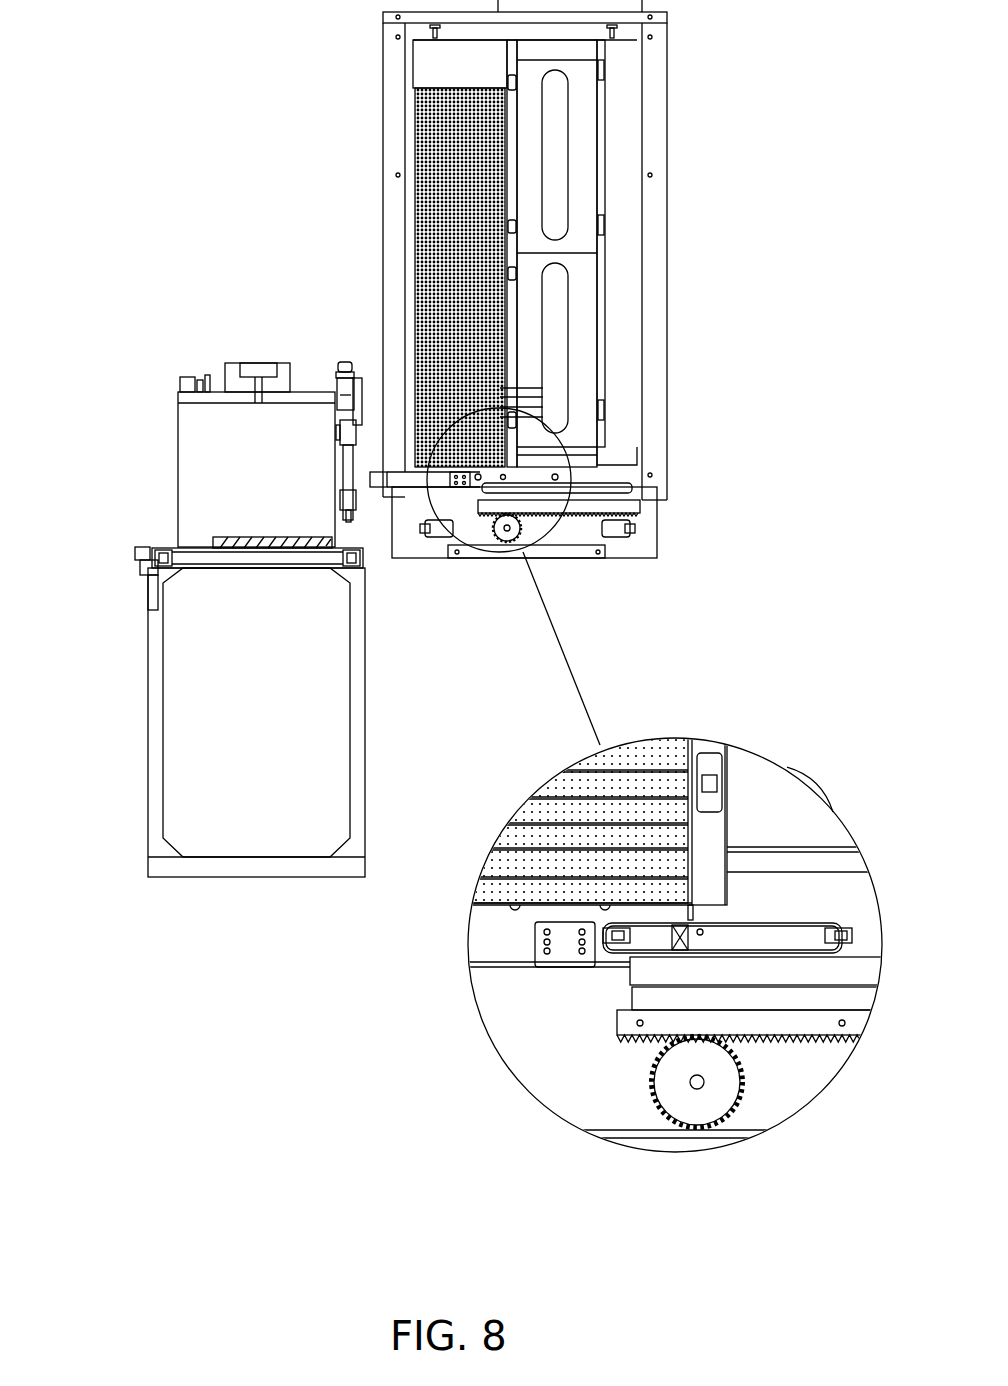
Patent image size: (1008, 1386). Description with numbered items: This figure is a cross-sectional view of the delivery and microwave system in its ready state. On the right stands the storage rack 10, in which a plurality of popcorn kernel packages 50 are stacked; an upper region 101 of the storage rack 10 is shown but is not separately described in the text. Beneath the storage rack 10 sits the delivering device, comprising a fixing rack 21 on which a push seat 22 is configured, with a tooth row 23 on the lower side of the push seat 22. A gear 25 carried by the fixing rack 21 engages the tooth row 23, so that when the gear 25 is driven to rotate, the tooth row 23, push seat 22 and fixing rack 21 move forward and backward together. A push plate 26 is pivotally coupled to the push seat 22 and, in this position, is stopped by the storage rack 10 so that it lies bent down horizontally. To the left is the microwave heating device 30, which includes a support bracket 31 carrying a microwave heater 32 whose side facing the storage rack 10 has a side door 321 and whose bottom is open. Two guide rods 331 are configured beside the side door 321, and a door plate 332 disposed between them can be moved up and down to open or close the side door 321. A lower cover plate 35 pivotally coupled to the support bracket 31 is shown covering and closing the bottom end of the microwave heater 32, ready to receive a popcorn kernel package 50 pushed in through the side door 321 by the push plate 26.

The storage rack 10 is at (578, 160).
The upper housing portion 101 is at (437, 68).
The popcorn kernel packages 50 is at (437, 266).
The push seat 22 is at (555, 477).
The fixing rack 21 is at (657, 533).
The tooth row 23 is at (583, 513).
The gear 25 is at (507, 537).
The push plate 26 is at (692, 910).
The microwave heating device 30 is at (130, 533).
The support bracket 31 is at (162, 685).
The microwave heater 32 is at (212, 390).
The side door 321 is at (336, 465).
The guide rods 331 is at (352, 502).
The door plate 332 is at (335, 415).
The lower cover plate 35 is at (263, 550).